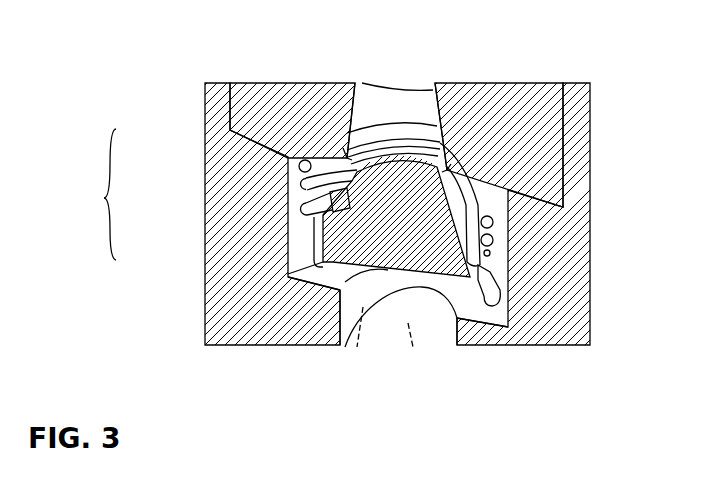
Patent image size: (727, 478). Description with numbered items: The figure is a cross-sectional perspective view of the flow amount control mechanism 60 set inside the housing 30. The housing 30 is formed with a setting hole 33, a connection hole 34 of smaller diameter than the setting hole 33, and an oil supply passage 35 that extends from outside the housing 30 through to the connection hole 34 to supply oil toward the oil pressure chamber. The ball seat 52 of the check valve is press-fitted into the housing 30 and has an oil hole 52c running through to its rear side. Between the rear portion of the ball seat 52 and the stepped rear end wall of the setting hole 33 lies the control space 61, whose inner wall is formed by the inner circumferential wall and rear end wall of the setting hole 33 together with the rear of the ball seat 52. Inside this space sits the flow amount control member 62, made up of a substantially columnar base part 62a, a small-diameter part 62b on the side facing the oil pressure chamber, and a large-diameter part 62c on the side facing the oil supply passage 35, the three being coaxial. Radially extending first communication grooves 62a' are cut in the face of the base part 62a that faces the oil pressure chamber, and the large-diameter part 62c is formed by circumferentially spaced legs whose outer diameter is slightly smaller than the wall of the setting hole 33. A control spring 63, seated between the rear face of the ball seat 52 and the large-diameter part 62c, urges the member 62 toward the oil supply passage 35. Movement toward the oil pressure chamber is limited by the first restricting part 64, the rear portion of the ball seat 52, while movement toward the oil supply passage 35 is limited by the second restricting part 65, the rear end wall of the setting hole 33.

The housing 30 is at (557, 346).
The setting hole 33 is at (508, 323).
The connection hole 34 is at (350, 313).
The oil supply passage 35 is at (410, 330).
The ball seat 52 is at (548, 118).
The oil hole 52c is at (390, 125).
The flow amount control mechanism 60 is at (97, 194).
The control space 61 is at (305, 233).
The flow amount control member 62 is at (301, 193).
The base part 62a is at (583, 232).
The first communication grooves 62a' is at (417, 206).
The small-diameter part 62b is at (507, 210).
The large-diameter part 62c is at (501, 296).
The control spring 63 is at (299, 162).
The first restricting part 64 is at (340, 150).
The second restricting part 65 is at (318, 292).